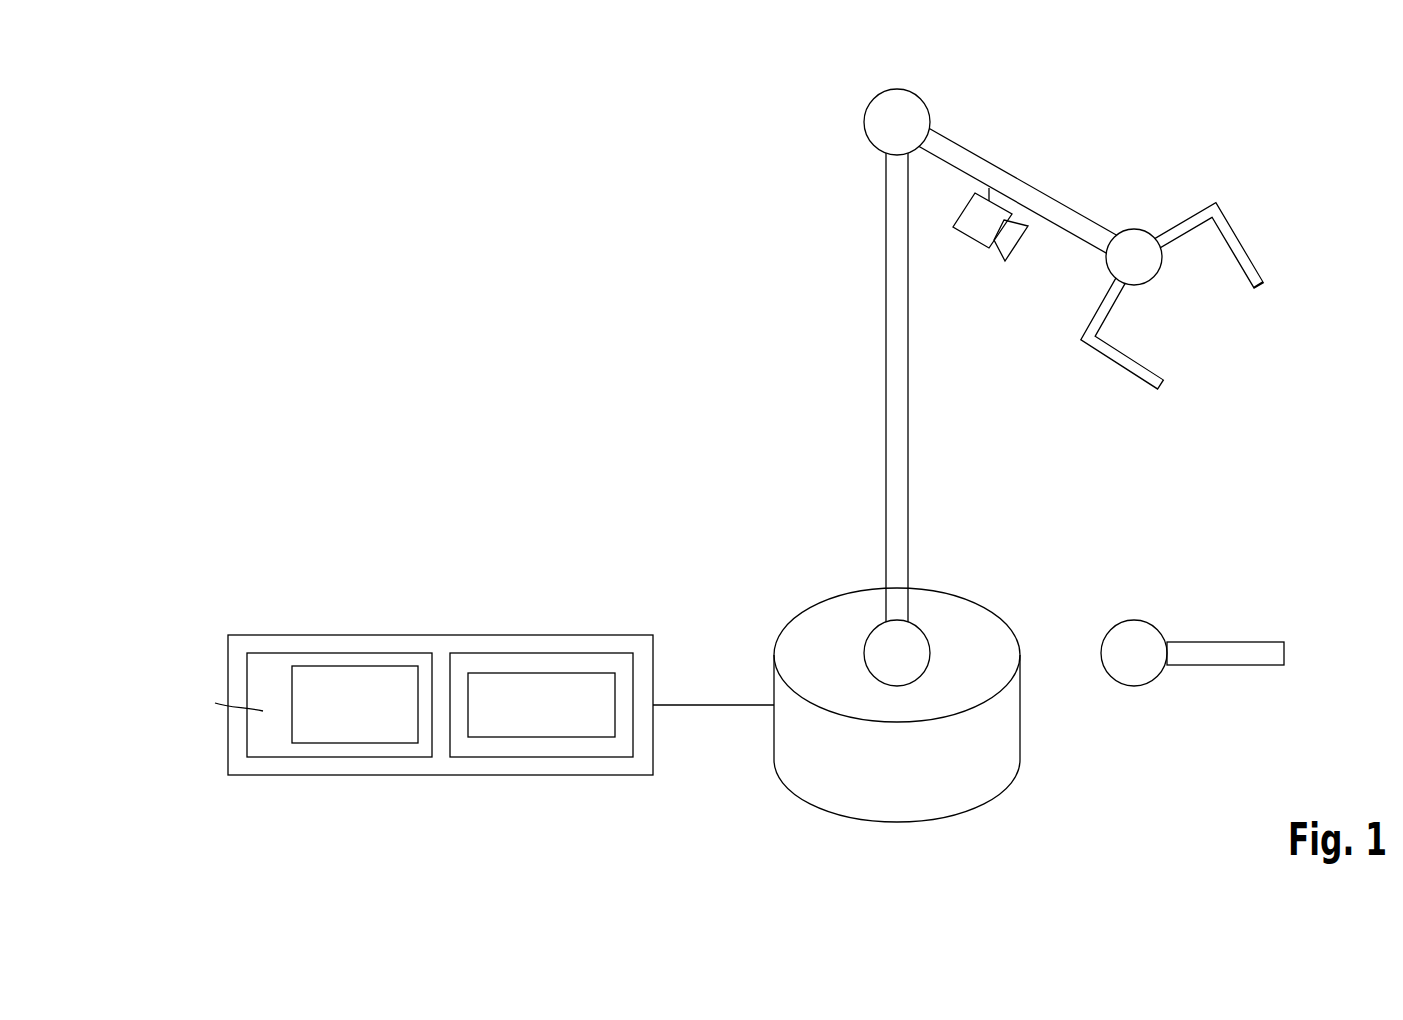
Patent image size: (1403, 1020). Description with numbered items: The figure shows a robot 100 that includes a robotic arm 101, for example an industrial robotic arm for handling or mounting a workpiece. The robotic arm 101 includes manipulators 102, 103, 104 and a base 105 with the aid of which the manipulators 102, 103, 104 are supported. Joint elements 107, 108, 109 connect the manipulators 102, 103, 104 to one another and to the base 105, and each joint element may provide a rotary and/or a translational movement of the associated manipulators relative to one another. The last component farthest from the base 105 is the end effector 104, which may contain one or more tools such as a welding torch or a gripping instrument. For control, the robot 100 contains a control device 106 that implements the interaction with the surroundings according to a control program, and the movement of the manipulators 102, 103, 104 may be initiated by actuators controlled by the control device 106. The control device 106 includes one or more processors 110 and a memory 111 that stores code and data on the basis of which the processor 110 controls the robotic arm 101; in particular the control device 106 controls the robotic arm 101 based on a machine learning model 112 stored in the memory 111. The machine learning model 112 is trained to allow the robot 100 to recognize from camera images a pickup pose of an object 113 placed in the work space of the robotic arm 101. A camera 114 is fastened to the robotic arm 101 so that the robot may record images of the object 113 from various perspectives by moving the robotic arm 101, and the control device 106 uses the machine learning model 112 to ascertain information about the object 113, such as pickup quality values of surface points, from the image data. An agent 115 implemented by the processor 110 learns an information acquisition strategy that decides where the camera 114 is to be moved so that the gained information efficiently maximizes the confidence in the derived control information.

The robot 100 is at (1056, 178).
The robotic arm 101 is at (857, 324).
The manipulator 102 is at (893, 430).
The manipulator 103 is at (1027, 188).
The end effector 104 is at (1243, 247).
The base 105 is at (1005, 721).
The control device 106 is at (457, 635).
The joint element 107 is at (880, 640).
The joint element 108 is at (872, 124).
The joint element 109 is at (1135, 245).
The processor 110 is at (377, 651).
The memory 111 is at (544, 653).
The machine learning model 112 is at (590, 673).
The object 113 is at (1225, 640).
The camera 114 is at (967, 247).
The agent 115 is at (318, 666).